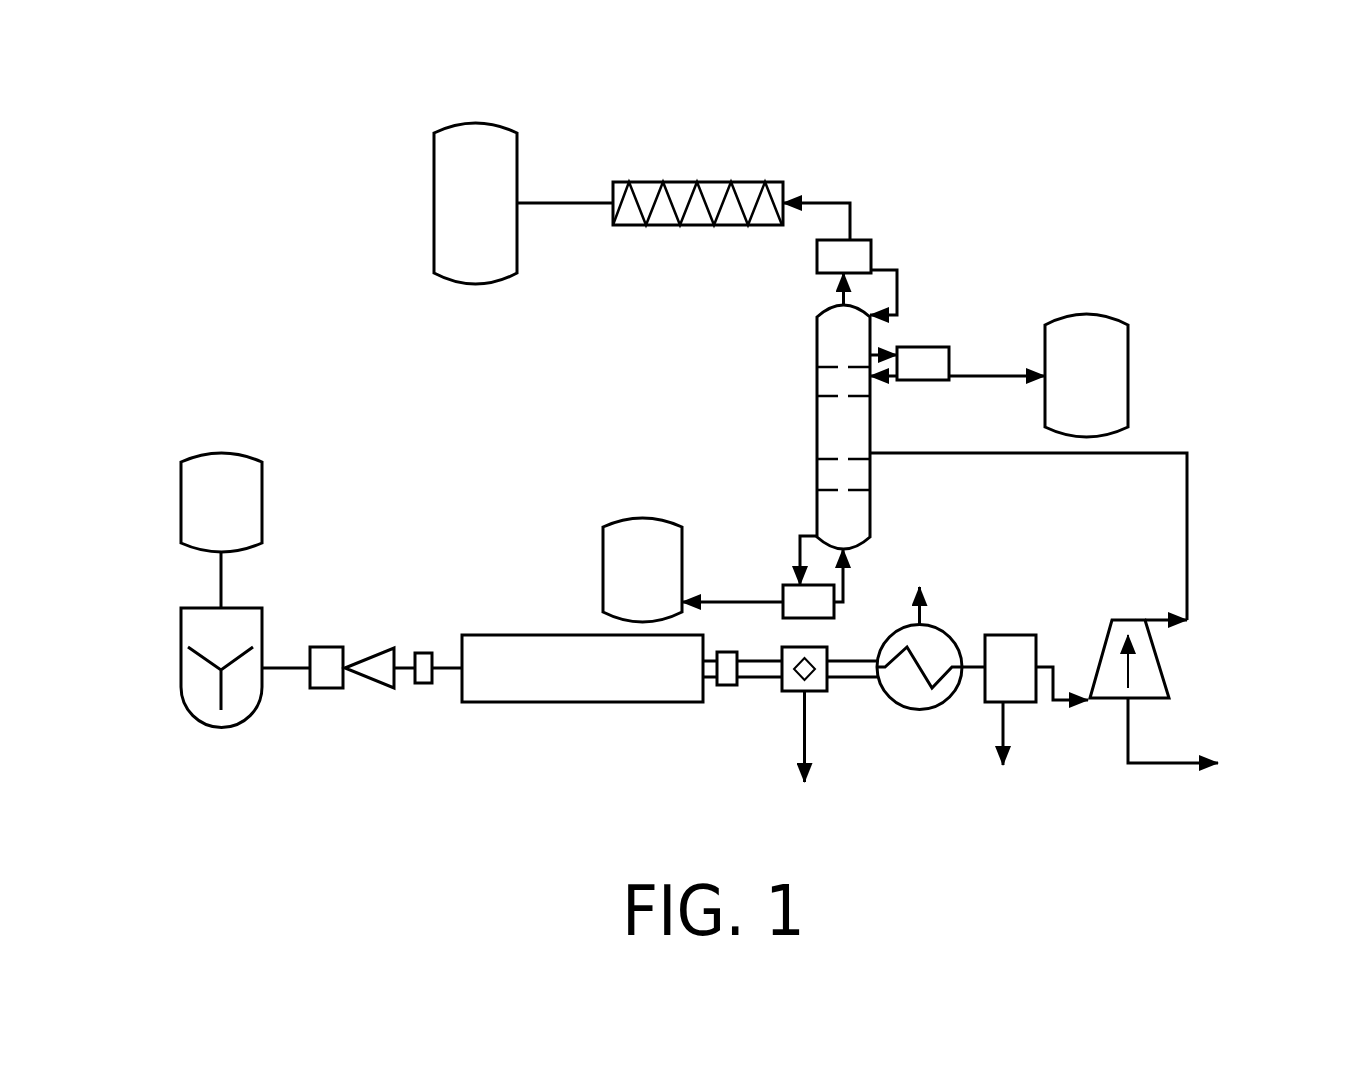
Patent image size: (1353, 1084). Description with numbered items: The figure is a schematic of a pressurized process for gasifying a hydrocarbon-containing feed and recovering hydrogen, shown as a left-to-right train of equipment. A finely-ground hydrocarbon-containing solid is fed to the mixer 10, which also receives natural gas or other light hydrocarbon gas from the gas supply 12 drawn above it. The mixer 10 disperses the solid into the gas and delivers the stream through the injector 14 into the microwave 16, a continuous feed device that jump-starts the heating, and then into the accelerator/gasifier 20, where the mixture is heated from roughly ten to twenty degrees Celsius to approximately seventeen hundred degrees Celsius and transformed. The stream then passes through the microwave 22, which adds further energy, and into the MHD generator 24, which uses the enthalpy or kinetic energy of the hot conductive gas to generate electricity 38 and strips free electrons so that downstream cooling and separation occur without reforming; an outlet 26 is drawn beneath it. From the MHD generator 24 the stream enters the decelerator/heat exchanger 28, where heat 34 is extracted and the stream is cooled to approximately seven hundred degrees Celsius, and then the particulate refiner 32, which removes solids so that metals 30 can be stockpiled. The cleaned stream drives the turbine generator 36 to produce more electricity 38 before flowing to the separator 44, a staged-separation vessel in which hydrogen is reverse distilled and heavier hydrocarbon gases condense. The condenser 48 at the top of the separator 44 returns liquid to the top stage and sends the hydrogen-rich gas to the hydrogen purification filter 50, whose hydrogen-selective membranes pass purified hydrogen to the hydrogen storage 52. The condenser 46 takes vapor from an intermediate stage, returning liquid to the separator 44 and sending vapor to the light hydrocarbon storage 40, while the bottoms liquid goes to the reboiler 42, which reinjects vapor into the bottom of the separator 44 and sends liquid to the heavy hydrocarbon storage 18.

The mixer 10 is at (180, 612).
The gas supply 12 is at (262, 473).
The injector 14 is at (343, 690).
The microwave 16 is at (427, 685).
The heavy hydrocarbon storage 18 is at (603, 541).
The accelerator/gasifier 20 is at (617, 703).
The microwave 22 is at (729, 685).
The magnetohydrodynamic generator 24 is at (780, 680).
The filter outlet 26 is at (793, 738).
The decelerator/heat exchanger 28 is at (917, 708).
The metals 30 is at (993, 753).
The particulate refiner 32 is at (1040, 645).
The heat 34 is at (925, 595).
The turbine generator 36 is at (1165, 678).
The electricity 38 is at (1197, 765).
The light hydrocarbon storage 40 is at (1128, 343).
The reboiler 42 is at (782, 585).
The separator 44 is at (815, 427).
The condenser 46 is at (950, 355).
The condenser 48 is at (873, 246).
The hydrogen purification filter 50 is at (752, 180).
The hydrogen storage 52 is at (518, 160).